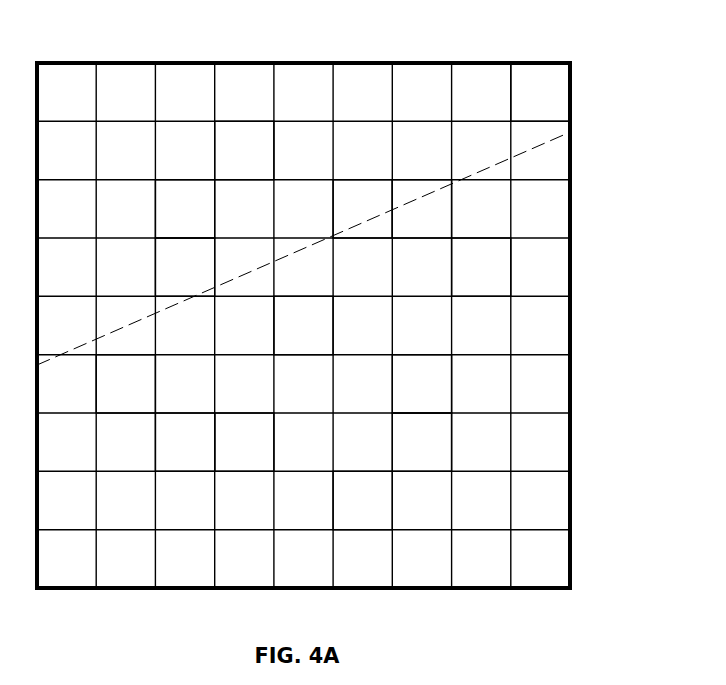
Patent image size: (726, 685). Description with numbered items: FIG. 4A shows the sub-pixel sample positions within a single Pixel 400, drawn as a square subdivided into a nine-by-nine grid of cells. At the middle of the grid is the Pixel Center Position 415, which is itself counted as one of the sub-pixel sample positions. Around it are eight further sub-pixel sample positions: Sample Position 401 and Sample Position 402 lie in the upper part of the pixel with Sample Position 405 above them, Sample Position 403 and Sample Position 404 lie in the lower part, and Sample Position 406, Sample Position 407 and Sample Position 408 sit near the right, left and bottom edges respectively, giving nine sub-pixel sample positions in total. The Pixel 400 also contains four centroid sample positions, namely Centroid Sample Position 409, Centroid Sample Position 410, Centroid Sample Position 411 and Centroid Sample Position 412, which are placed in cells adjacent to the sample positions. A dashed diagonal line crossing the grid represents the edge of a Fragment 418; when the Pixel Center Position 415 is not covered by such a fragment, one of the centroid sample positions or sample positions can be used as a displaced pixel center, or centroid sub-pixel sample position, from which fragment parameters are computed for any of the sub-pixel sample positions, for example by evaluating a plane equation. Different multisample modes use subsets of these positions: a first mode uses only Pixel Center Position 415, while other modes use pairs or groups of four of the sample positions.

The pixel 400 is at (438, 62).
The fragment 418 is at (559, 92).
The sample position 401 is at (165, 226).
The sample position 402 is at (401, 226).
The sample position 403 is at (164, 456).
The sample position 404 is at (401, 456).
The sample position 405 is at (225, 166).
The sample position 406 is at (461, 282).
The sample position 407 is at (107, 396).
The sample position 408 is at (341, 516).
The centroid sample position 409 is at (165, 282).
The centroid sample position 410 is at (342, 226).
The centroid sample position 411 is at (224, 456).
The centroid sample position 412 is at (401, 398).
The pixel center position 415 is at (284, 340).